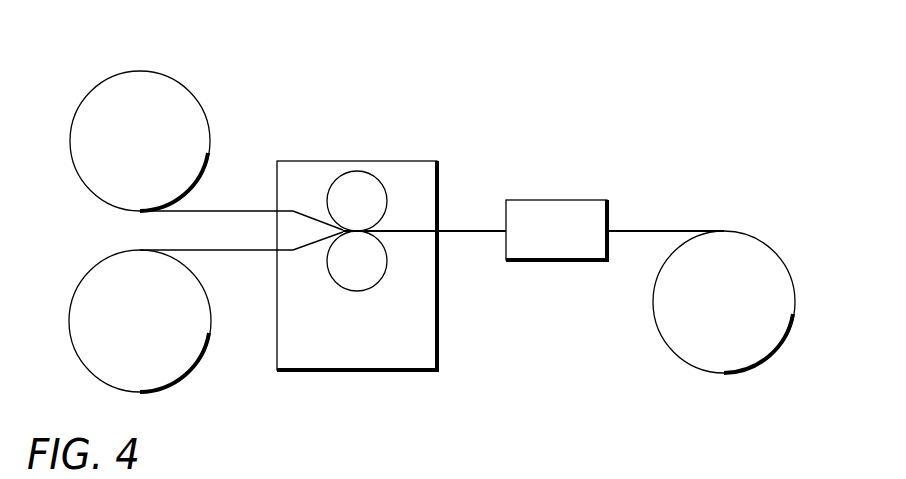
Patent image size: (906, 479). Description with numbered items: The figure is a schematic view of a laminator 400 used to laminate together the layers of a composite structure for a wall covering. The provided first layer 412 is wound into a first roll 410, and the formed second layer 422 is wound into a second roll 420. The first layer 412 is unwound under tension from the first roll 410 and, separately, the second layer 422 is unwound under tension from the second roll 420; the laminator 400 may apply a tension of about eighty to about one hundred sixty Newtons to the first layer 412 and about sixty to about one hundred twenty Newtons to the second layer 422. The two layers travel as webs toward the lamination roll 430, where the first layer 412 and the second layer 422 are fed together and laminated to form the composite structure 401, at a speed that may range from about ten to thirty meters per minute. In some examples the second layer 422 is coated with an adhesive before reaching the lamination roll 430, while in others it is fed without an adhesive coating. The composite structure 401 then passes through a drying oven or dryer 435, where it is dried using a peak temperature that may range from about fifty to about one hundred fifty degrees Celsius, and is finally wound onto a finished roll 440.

The laminator 400 is at (665, 72).
The composite structure 401 is at (470, 229).
The first roll 410 is at (128, 258).
The first layer 412 is at (244, 252).
The second roll 420 is at (128, 80).
The second layer 422 is at (243, 210).
The lamination roll 430 is at (356, 163).
The dryer 435 is at (554, 200).
The finished roll 440 is at (733, 238).